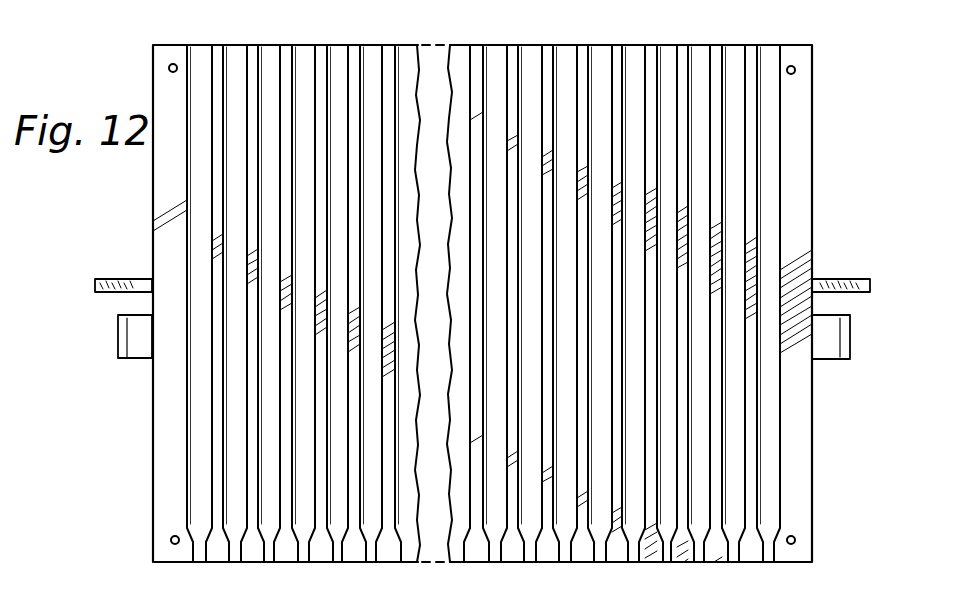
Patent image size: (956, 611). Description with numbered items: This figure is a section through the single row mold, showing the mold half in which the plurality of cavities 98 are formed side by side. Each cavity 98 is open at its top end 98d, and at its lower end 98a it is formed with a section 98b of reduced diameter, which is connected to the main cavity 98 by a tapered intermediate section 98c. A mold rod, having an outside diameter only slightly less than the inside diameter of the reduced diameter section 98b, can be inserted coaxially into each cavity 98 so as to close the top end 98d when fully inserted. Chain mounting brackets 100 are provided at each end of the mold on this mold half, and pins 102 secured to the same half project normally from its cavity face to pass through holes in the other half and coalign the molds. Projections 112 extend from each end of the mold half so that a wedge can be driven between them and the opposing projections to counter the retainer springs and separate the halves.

The cavity 98 is at (658, 48).
The lower end 98a is at (206, 564).
The section of reduced diameter 98b is at (240, 549).
The tapered intermediate section 98c is at (198, 526).
The top end 98d is at (303, 44).
The chain mounting bracket 100 is at (130, 277).
The pin 102 is at (174, 64).
The projection 112 is at (118, 349).